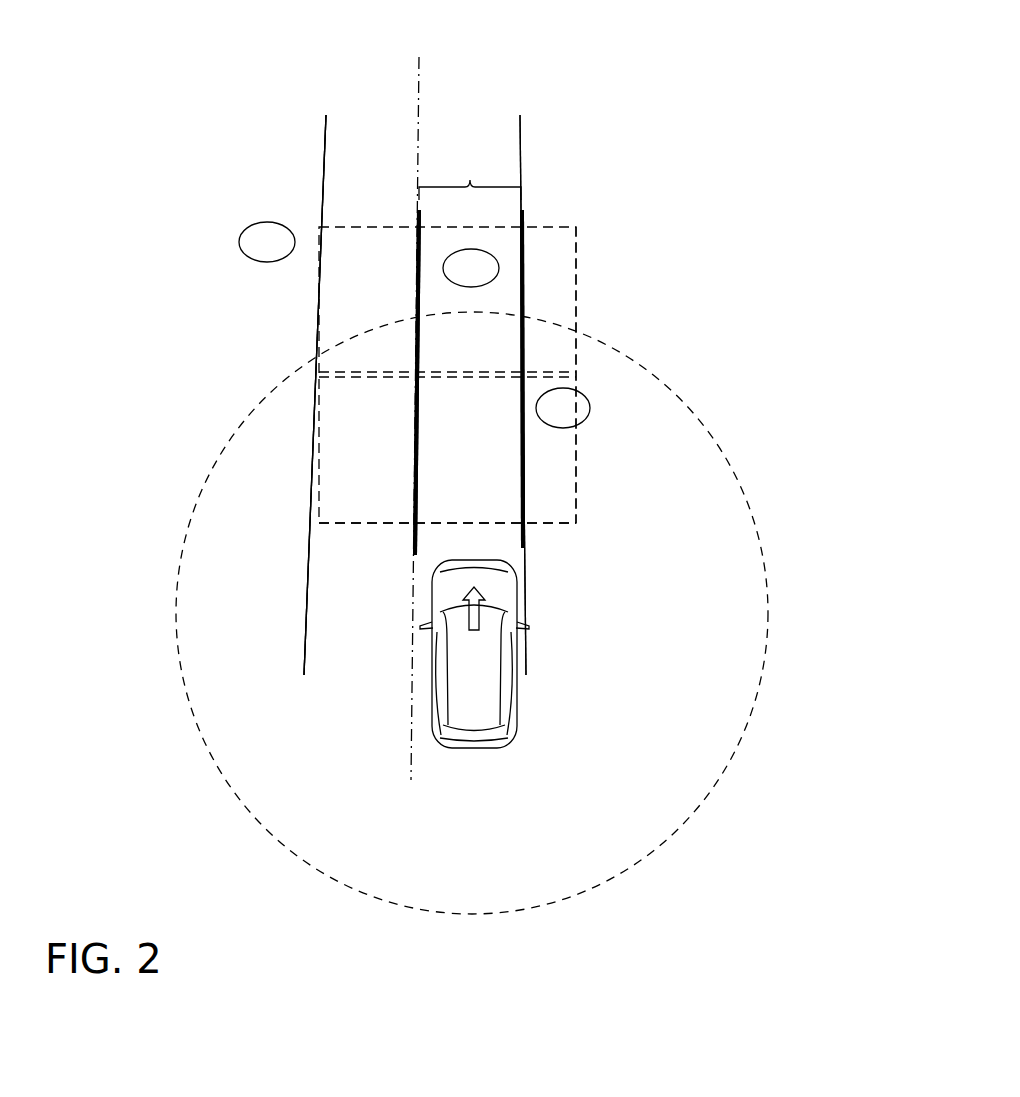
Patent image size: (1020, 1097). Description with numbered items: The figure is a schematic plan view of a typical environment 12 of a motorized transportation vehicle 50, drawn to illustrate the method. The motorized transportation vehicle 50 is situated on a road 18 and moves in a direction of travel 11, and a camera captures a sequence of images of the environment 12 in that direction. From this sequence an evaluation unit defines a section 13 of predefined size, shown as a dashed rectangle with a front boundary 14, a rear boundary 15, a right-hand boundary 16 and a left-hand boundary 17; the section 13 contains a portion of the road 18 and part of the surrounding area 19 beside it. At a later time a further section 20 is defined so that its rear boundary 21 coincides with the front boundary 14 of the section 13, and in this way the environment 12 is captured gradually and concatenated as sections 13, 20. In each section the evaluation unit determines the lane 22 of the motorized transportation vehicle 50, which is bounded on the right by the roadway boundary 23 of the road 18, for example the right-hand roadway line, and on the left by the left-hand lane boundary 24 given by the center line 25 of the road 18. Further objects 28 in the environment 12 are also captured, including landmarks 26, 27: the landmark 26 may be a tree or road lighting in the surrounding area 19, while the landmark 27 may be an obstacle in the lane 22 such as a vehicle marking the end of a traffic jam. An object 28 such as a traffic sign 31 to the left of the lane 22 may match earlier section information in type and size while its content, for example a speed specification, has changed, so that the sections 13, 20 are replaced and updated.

The direction of travel 11 is at (474, 612).
The environment 12 is at (655, 851).
The section 13 is at (334, 488).
The front boundary 14 is at (508, 336).
The rear boundary 15 is at (543, 522).
The right-hand boundary 16 is at (576, 446).
The left-hand boundary 17 is at (318, 436).
The road 18 is at (480, 106).
The surrounding area 19 is at (293, 173).
The further section 20 is at (346, 296).
The rear boundary 21 is at (540, 373).
The lane 22 is at (460, 188).
The roadway boundary 23 is at (523, 492).
The left-hand lane boundary 24 is at (418, 412).
The center line 25 is at (419, 146).
The landmark 26 is at (563, 408).
The landmark 27 is at (471, 268).
The further object 28 is at (257, 241).
The traffic sign 31 is at (233, 221).
The motorized transportation vehicle 50 is at (474, 684).